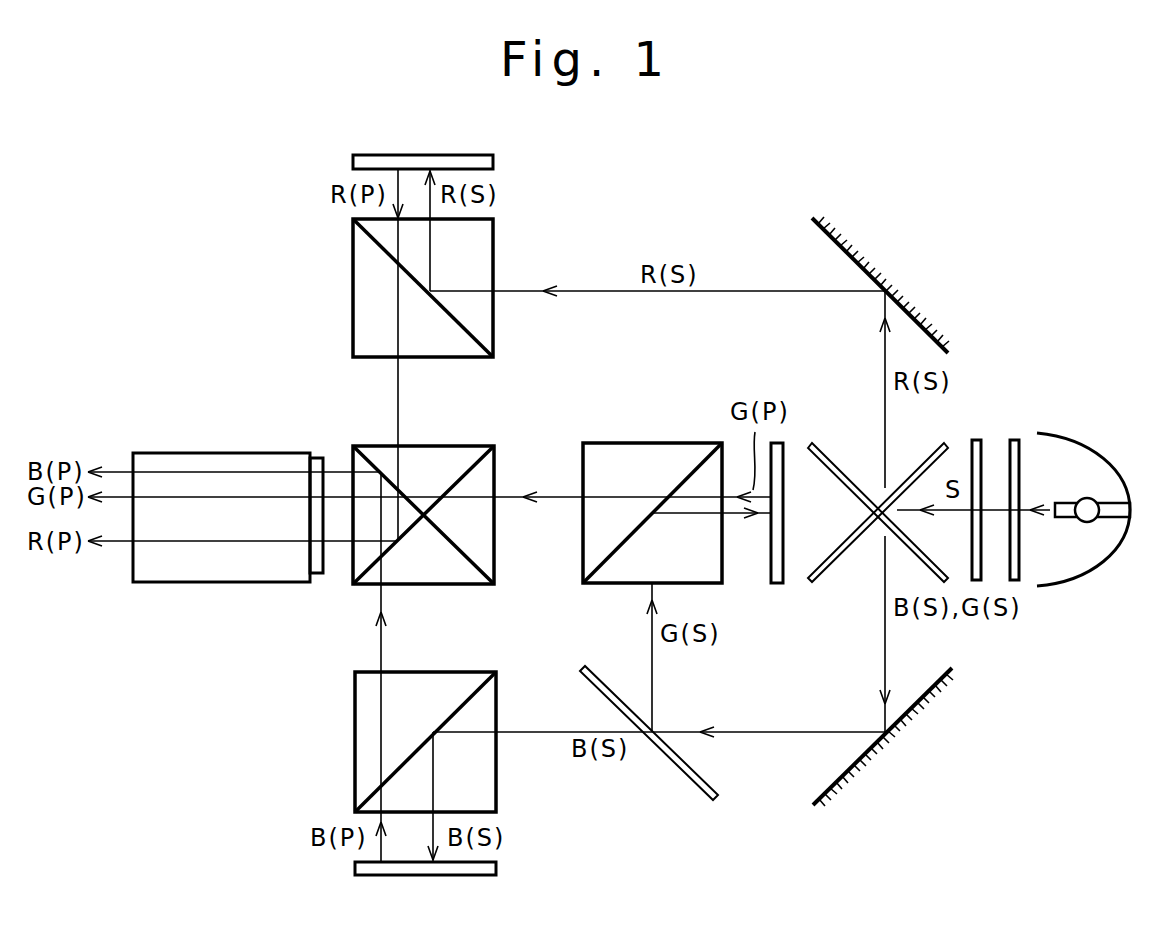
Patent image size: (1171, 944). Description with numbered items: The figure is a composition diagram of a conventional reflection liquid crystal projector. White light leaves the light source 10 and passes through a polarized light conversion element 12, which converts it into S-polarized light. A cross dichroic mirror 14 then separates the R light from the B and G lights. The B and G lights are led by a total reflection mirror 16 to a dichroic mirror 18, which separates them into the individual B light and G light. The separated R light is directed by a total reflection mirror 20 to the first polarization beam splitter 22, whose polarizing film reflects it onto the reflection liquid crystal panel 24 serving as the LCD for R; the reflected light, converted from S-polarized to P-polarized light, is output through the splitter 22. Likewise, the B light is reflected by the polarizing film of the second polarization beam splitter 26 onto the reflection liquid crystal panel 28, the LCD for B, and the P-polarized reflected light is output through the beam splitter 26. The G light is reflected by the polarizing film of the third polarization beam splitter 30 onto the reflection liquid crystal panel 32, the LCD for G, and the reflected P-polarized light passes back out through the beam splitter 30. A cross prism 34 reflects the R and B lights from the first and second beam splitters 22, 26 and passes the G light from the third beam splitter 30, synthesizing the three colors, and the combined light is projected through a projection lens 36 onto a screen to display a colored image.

The light source 10 is at (1037, 434).
The polarized light conversion element 12 is at (1028, 440).
The cross dichroic mirror 14 is at (866, 560).
The total reflection mirror 16 is at (856, 768).
The dichroic mirror 18 is at (706, 800).
The total reflection mirror 20 is at (832, 226).
The first polarization beam splitter 22 is at (464, 243).
The reflection liquid crystal panel 24 is at (430, 160).
The second polarization beam splitter 26 is at (413, 688).
The reflection liquid crystal panel 28 is at (405, 870).
The third polarization beam splitter 30 is at (686, 450).
The reflection liquid crystal panel 32 is at (777, 452).
The cross prism 34 is at (428, 464).
The projection lens 36 is at (211, 458).